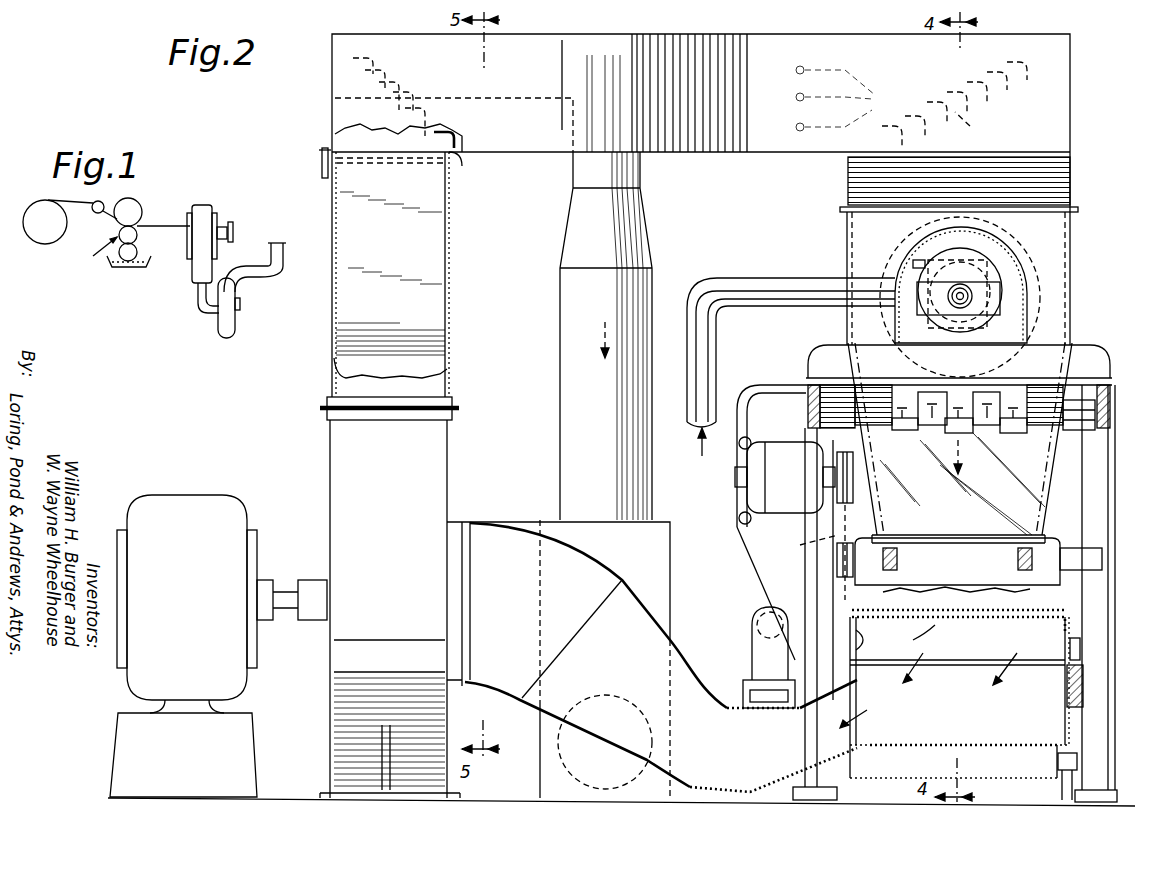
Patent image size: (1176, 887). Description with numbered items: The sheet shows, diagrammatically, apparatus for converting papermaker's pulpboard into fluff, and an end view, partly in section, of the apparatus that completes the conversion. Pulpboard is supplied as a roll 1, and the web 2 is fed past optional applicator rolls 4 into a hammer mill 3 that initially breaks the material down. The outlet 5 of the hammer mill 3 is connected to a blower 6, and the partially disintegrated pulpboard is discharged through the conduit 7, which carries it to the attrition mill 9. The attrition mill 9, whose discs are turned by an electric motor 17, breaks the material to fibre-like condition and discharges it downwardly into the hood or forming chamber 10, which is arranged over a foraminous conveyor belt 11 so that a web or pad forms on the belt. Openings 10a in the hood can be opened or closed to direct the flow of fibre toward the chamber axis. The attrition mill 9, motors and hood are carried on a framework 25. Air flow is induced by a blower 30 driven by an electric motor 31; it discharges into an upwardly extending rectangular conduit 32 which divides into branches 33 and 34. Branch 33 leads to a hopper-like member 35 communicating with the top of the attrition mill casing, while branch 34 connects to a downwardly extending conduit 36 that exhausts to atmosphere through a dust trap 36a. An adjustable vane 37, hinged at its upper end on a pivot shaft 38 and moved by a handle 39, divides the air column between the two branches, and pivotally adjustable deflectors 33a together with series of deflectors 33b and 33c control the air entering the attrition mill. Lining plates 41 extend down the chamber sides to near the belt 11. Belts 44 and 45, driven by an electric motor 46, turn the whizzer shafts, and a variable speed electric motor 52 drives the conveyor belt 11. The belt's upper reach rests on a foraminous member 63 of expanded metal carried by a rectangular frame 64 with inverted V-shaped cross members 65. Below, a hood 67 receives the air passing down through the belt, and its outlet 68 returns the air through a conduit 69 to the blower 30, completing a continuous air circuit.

In FIG. 1, the roll of pulpboard 1 is at (62, 244).
In FIG. 1, the web 2 is at (172, 226).
In FIG. 1, the hammer mill 3 is at (203, 205).
In FIG. 1, the applicator rolls 4 is at (97, 253).
In FIG. 1, the outlet 5 is at (200, 306).
In FIG. 1, the blower 6 is at (233, 330).
In FIG. 1, the conduit 7 is at (264, 280).
In FIG. 2, the conduit 7 is at (687, 403).
In FIG. 2, the attrition mill 9 is at (1073, 262).
In FIG. 2, the hood or forming chamber 10 is at (1052, 458).
In FIG. 2, the openings 10a is at (959, 387).
In FIG. 2, the foraminous conveyor belt 11 is at (960, 620).
In FIG. 2, the electric motor 17 is at (1013, 296).
In FIG. 2, the framework 25 is at (1112, 438).
In FIG. 2, the blower 30 is at (447, 466).
In FIG. 2, the electric motor 31 is at (212, 494).
In FIG. 2, the conduit or riser 32 is at (328, 332).
In FIG. 2, the branch 33 is at (758, 156).
In FIG. 2, the deflectors 33a is at (853, 98).
In FIG. 2, the series of deflectors 33b is at (398, 105).
In FIG. 2, the series of deflectors 33c is at (954, 104).
In FIG. 2, the branch 34 is at (556, 100).
In FIG. 2, the hopper-like member 35 is at (1066, 190).
In FIG. 2, the conduit 36 is at (573, 222).
In FIG. 2, the dust trap 36a is at (673, 586).
In FIG. 2, the vane or valve plate 37 is at (437, 232).
In FIG. 2, the hinge or pivot shaft 38 is at (460, 166).
In FIG. 2, the handle 39 is at (322, 172).
In FIG. 2, the lining plates 41 is at (1035, 600).
In FIG. 2, the belt 44 is at (845, 514).
In FIG. 2, the belt 45 is at (800, 545).
In FIG. 2, the electric motor 46 is at (745, 500).
In FIG. 2, the electric motor 52 is at (752, 636).
In FIG. 2, the foraminous member 63 is at (914, 637).
In FIG. 2, the rectangular frame 64 is at (869, 640).
In FIG. 2, the cross members 65 is at (940, 660).
In FIG. 2, the hood 67 is at (1064, 694).
In FIG. 2, the outlet 68 is at (860, 752).
In FIG. 2, the conduit 69 is at (738, 668).